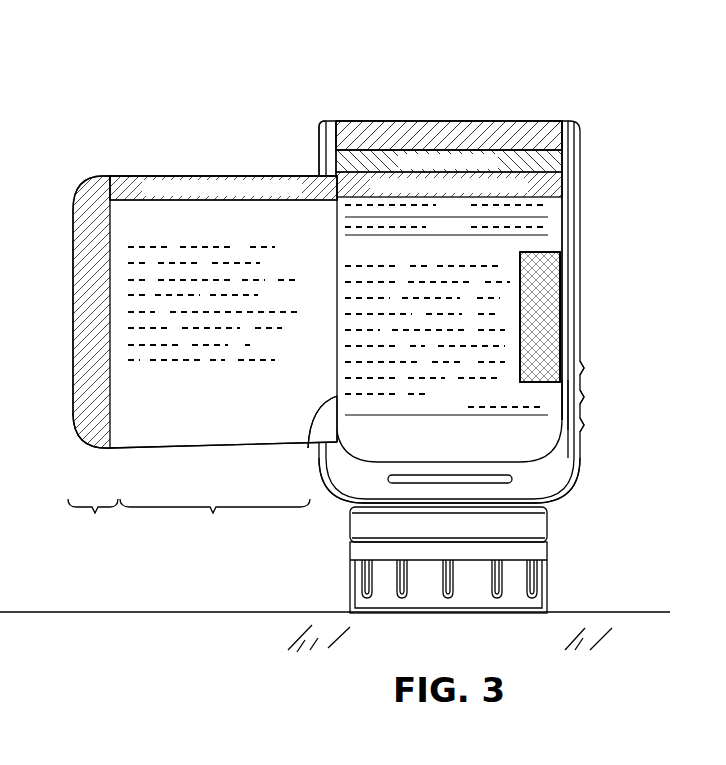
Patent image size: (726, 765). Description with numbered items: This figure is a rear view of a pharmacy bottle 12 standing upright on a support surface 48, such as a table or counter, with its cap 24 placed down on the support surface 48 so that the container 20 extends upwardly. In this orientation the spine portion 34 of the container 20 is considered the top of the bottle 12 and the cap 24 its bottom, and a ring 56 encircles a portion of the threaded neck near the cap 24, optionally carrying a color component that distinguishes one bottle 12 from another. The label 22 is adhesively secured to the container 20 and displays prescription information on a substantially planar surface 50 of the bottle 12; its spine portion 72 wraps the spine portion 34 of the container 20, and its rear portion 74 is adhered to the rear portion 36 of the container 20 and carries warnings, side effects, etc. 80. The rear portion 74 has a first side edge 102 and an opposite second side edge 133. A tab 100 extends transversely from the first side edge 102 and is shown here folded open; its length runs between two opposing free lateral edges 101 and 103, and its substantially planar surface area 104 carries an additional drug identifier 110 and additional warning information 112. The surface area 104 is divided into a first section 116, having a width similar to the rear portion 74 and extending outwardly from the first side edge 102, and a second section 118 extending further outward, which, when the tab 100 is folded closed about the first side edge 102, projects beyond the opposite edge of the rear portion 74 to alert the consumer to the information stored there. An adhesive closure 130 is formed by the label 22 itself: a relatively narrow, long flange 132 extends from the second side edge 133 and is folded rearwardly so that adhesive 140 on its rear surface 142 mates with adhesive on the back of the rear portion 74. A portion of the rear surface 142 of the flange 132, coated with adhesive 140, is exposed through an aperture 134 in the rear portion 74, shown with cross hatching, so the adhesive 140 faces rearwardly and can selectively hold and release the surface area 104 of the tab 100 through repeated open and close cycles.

The bottle 12 is at (181, 73).
The container 20 is at (562, 488).
The label 22 is at (533, 132).
The cap 24 is at (533, 605).
The spine portion 34 is at (319, 128).
The rear portion 36 is at (576, 460).
The support surface 48 is at (290, 612).
The substantially planar surface 50 is at (573, 427).
The ring 56 is at (533, 524).
The spine portion 72 is at (345, 138).
The rear portion 74 is at (550, 222).
The warnings, side effects, etc. 80 is at (470, 249).
The tab 100 is at (110, 176).
The free lateral edge 101 is at (178, 176).
The first side edge 102 is at (310, 438).
The free lateral edge 103 is at (225, 448).
The substantially planar surface area 104 is at (160, 436).
The additional drug identifier 110 is at (148, 176).
The additional warning information 112 is at (110, 235).
The first section 116 is at (215, 520).
The second section 118 is at (93, 520).
The adhesive closure 130 is at (566, 403).
The flange 132 is at (550, 276).
The second side edge 133 is at (563, 212).
The aperture 134 is at (546, 368).
The adhesive 140 is at (546, 302).
The rear surface 142 is at (550, 338).